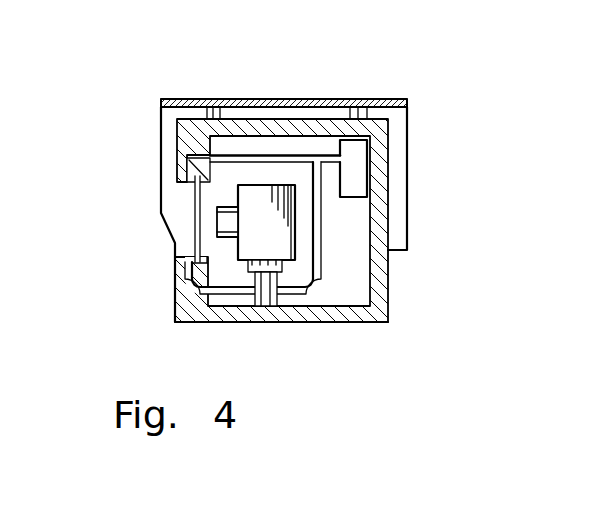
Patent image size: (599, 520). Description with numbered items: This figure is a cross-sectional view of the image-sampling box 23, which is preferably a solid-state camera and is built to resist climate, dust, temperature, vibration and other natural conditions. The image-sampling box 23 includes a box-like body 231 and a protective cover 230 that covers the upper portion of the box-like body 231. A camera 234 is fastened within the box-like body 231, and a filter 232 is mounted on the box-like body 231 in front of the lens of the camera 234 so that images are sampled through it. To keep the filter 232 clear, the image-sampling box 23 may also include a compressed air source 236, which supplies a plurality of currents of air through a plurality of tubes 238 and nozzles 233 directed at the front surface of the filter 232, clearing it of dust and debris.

The image-sampling box 23 is at (149, 100).
The protective cover 230 is at (229, 98).
The box-like body 231 is at (160, 136).
The filter 232 is at (215, 218).
The nozzles 233 is at (182, 188).
The camera 234 is at (275, 237).
The compressed air source 236 is at (397, 165).
The tubes 238 is at (288, 154).